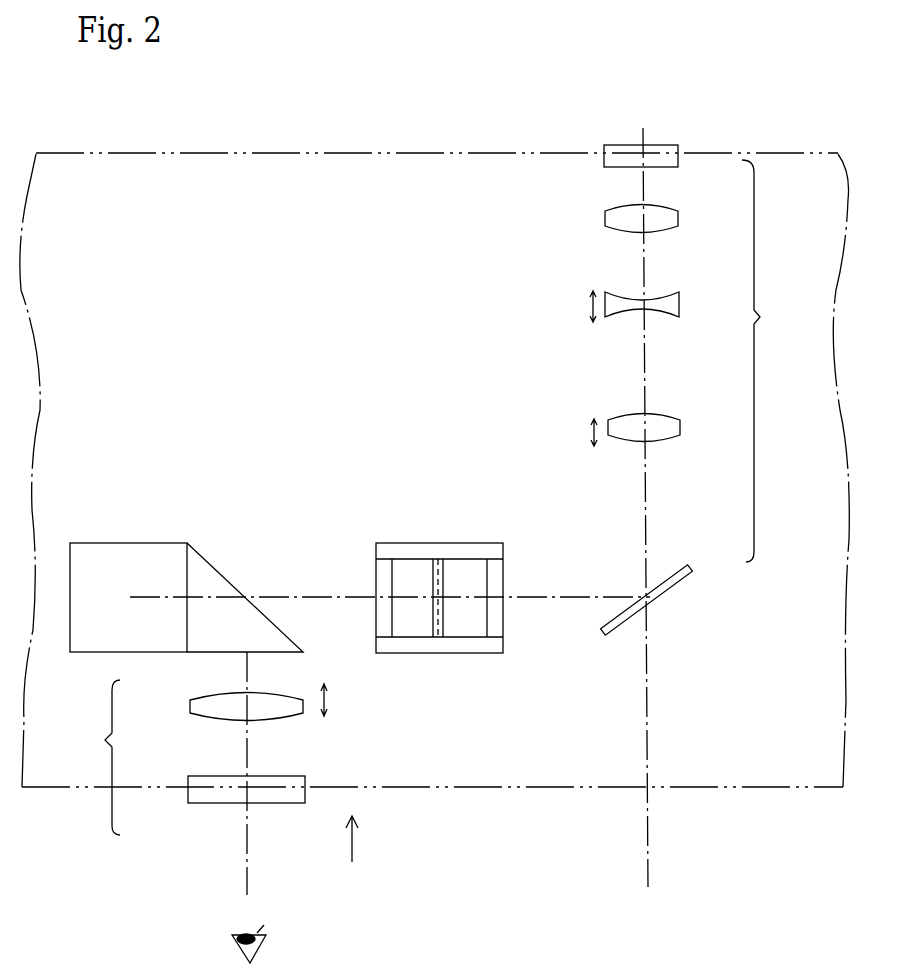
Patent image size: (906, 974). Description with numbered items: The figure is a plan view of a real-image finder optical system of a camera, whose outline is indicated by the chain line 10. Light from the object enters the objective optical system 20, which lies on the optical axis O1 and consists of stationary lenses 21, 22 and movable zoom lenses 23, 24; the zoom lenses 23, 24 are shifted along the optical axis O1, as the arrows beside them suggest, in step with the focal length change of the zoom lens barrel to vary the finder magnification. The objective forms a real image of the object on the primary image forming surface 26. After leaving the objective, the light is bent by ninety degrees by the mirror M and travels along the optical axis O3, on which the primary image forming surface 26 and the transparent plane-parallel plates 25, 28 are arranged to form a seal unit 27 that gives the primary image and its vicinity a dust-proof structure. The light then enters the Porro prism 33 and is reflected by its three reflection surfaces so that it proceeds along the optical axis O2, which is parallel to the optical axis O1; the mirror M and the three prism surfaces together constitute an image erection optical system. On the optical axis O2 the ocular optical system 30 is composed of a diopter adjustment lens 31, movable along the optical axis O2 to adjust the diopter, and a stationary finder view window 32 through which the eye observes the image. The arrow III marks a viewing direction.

The housing 10 is at (358, 160).
The objective optical system 20 is at (772, 361).
The stationary lens 21 is at (665, 160).
The stationary lens 22 is at (674, 219).
The movable zoom lens 23 is at (678, 305).
The movable zoom lens 24 is at (678, 428).
The transparent plane-parallel plate 25 is at (501, 590).
The primary image forming surface 26 is at (442, 612).
The seal unit 27 is at (432, 601).
The transparent plane-parallel plate 28 is at (378, 580).
The ocular optical system 30 is at (93, 757).
The diopter adjustment lens 31 is at (190, 708).
The stationary finder view window 32 is at (193, 785).
The Porro prism 33 is at (150, 560).
The mirror M is at (678, 580).
The optical axis O1 is at (643, 377).
The optical axis O2 is at (250, 762).
The optical axis O3 is at (352, 598).
The viewing direction of FIG. 3 III is at (350, 858).